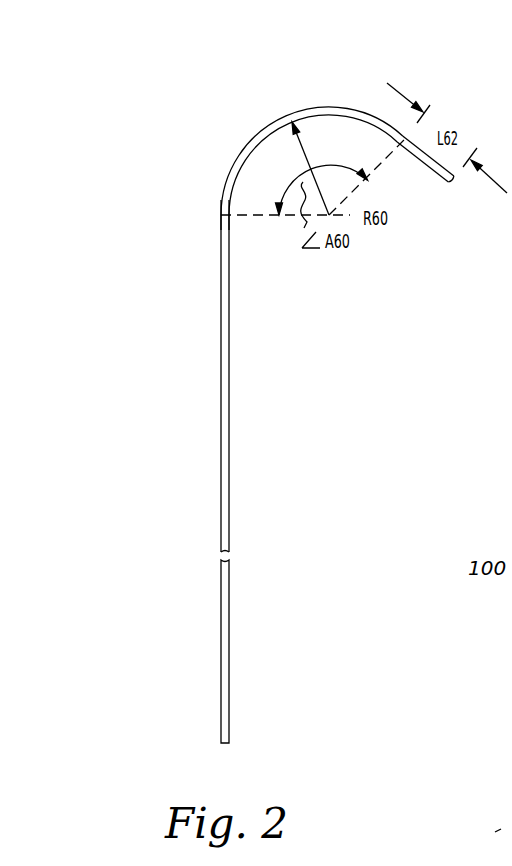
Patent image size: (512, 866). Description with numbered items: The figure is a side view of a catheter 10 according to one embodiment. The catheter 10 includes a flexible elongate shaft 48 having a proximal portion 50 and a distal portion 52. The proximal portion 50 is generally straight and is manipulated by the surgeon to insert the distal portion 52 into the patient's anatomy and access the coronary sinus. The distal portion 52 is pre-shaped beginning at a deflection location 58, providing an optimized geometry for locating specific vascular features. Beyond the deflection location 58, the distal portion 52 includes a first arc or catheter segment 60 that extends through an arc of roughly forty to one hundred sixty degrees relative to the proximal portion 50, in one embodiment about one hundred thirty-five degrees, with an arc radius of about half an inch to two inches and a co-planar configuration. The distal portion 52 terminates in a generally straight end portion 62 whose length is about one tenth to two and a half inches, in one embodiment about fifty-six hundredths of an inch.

The catheter 10 is at (137, 84).
The flexible elongate shaft 48 is at (243, 382).
The proximal portion 50 is at (230, 650).
The distal portion 52 is at (221, 313).
The deflection location 58 is at (221, 215).
The catheter segment 60 is at (347, 115).
The end portion 62 is at (428, 171).